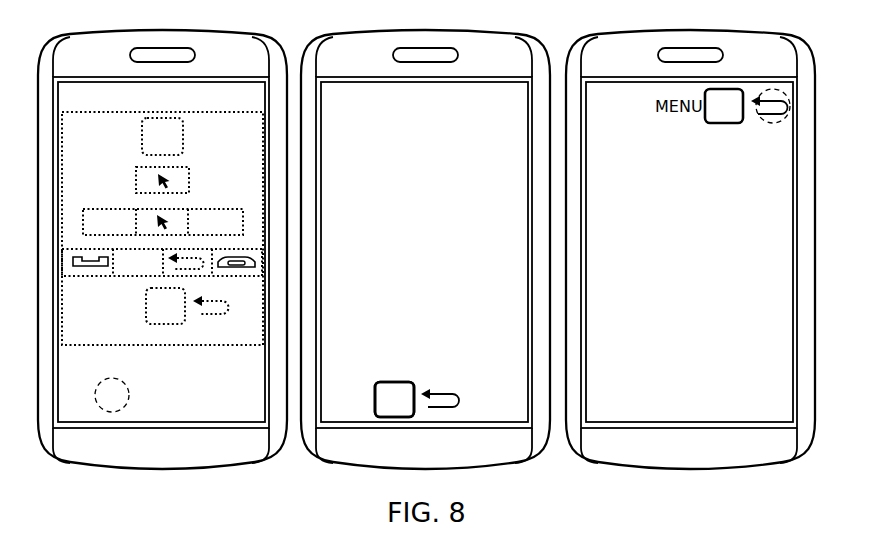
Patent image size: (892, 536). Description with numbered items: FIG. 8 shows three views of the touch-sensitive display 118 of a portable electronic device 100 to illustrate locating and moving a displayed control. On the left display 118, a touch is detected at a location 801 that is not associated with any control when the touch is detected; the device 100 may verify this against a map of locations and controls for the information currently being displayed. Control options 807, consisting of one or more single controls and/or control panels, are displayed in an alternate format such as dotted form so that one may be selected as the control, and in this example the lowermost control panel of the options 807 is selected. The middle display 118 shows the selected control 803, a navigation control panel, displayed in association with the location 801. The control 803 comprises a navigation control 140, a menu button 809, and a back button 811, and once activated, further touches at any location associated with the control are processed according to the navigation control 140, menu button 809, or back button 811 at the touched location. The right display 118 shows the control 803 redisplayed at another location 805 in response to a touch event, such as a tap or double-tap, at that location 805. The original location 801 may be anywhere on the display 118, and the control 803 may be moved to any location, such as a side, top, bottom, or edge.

The portable electronic device 100 is at (275, 28).
The touch-sensitive display 118 is at (98, 92).
The navigation control 140 is at (402, 382).
The location 801 is at (93, 393).
The selected control 803 is at (375, 412).
The another location 805 is at (756, 100).
The control options 807 is at (192, 345).
The menu button 809 is at (351, 385).
The back button 811 is at (448, 383).